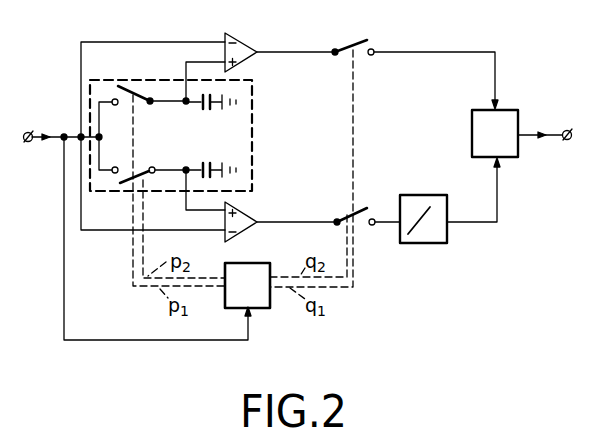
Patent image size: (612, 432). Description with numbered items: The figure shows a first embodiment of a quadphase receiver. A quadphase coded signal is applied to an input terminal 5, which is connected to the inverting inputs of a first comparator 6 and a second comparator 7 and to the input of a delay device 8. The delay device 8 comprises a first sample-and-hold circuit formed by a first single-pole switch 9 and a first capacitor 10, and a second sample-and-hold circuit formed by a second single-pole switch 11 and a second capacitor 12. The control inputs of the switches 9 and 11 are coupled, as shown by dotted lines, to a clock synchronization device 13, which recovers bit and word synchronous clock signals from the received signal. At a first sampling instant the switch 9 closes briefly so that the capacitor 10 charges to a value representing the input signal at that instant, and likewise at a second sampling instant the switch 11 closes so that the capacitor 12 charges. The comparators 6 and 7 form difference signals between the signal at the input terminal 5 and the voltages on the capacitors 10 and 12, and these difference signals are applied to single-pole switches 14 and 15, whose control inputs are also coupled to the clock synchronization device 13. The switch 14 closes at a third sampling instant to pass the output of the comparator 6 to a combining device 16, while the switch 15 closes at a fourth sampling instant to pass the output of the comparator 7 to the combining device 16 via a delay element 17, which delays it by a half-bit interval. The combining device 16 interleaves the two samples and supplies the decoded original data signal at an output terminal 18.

The input terminal 5 is at (28, 142).
The first comparator 6 is at (247, 43).
The second comparator 7 is at (248, 228).
The delay device 8 is at (253, 125).
The first single-pole switch 9 is at (138, 88).
The first capacitor 10 is at (202, 109).
The second single-pole switch 11 is at (138, 175).
The second capacitor 12 is at (204, 162).
The clock synchronization device 13 is at (263, 310).
The single-pole switch 14 is at (349, 42).
The single-pole switch 15 is at (363, 200).
The combining device 16 is at (510, 158).
The delay element 17 is at (435, 245).
The output terminal 18 is at (568, 140).